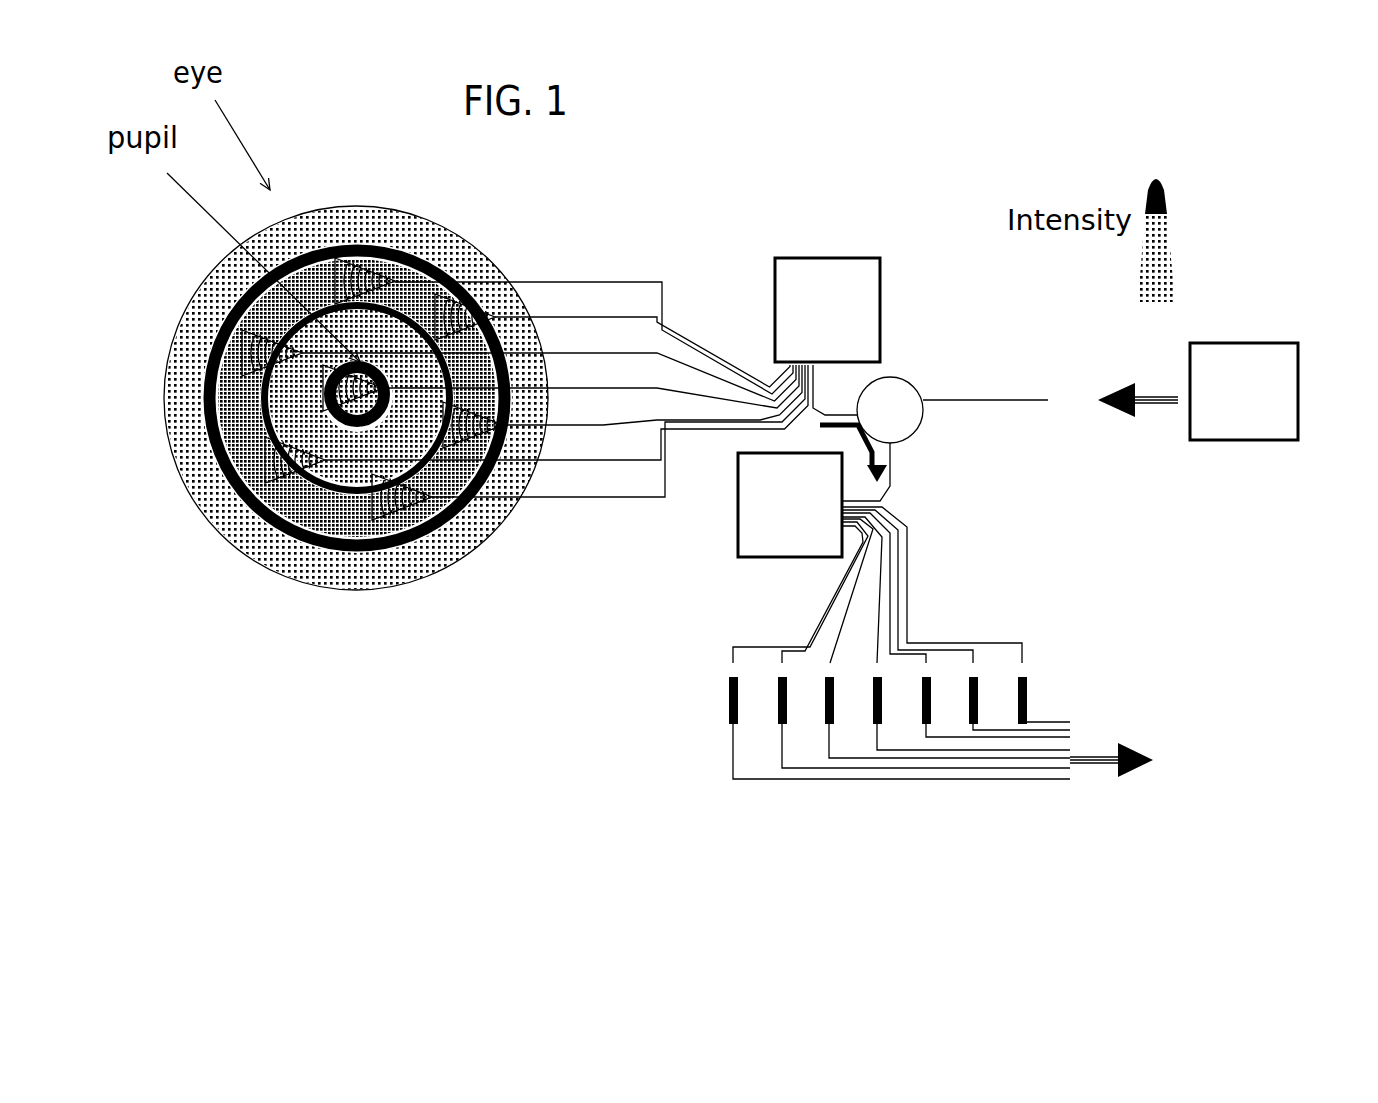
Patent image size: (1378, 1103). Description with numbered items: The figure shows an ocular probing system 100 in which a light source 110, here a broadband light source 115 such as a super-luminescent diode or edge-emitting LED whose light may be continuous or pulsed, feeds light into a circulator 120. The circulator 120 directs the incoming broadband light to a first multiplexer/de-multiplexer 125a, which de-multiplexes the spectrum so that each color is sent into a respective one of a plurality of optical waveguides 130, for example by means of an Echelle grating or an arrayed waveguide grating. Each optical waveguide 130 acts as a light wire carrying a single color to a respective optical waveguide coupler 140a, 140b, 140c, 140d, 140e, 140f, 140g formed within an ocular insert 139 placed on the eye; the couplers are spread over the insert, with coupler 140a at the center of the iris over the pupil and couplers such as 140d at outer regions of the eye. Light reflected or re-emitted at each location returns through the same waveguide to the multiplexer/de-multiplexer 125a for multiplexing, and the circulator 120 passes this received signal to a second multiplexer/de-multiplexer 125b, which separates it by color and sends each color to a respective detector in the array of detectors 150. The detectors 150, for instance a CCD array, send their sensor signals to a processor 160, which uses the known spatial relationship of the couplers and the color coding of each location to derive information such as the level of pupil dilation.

The ocular probing system 100 is at (802, 118).
The light source 110 is at (1244, 391).
The broadband light source 115 is at (1299, 424).
The circulator 120 is at (911, 381).
The multiplexer/de-multiplexer 125a is at (827, 310).
The multiplexer/de-multiplexer 125b is at (790, 505).
The optical waveguides 130 is at (603, 265).
The ocular insert 139 is at (305, 575).
The optical waveguide coupler 140a is at (318, 391).
The optical waveguide coupler 140b is at (357, 252).
The optical waveguide coupler 140c is at (472, 286).
The optical waveguide coupler 140d is at (503, 446).
The optical waveguide coupler 140e is at (402, 526).
The optical waveguide coupler 140f is at (264, 486).
The optical waveguide coupler 140g is at (234, 340).
The array of detectors 150 is at (1012, 702).
The processor 160 is at (1142, 758).